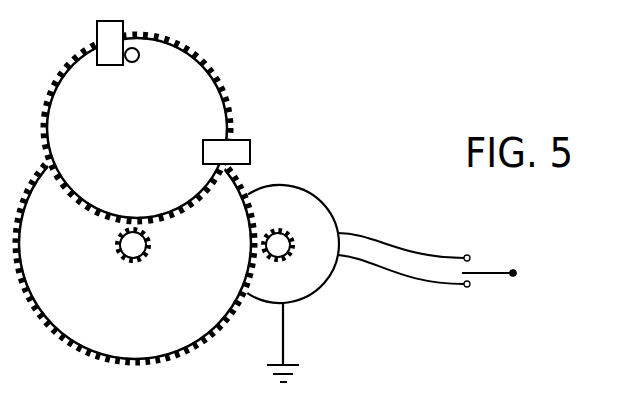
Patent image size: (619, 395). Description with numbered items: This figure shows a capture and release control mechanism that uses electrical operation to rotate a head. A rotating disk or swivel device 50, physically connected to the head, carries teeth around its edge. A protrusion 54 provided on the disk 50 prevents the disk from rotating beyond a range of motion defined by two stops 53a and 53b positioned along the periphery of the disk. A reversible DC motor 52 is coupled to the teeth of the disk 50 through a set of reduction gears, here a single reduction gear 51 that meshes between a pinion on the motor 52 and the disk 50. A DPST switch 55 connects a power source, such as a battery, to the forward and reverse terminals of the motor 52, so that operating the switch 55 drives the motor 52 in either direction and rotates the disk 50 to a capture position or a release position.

The rotating disk 50 is at (138, 142).
The reduction gear 51 is at (145, 315).
The reversible DC motor 52 is at (312, 190).
The stop 53a is at (97, 26).
The stop 53b is at (248, 139).
The protrusion 54 is at (137, 62).
The DPST switch 55 is at (510, 234).